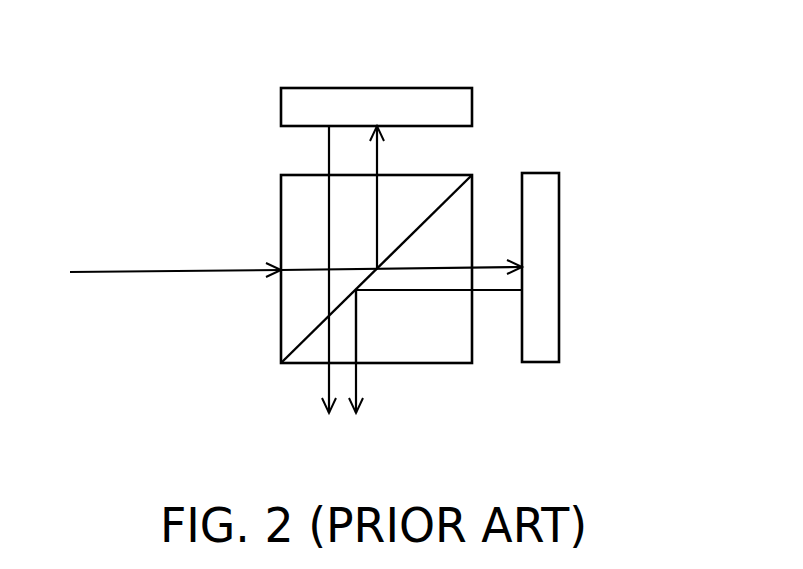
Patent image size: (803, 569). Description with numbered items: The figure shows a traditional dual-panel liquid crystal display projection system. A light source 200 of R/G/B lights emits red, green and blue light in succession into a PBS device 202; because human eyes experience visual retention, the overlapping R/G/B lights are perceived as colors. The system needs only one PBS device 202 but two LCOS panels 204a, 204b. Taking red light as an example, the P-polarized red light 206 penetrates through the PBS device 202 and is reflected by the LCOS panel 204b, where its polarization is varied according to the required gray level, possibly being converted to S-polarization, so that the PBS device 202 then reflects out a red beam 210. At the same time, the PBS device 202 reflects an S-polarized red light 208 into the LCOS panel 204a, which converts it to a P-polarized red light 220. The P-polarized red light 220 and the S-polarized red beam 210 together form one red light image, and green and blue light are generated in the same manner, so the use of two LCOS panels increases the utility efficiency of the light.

The light source of R/G/B lights 200 is at (130, 273).
The PBS device 202 is at (280, 321).
The LCOS panel 204a is at (390, 88).
The LCOS panel 204b is at (559, 290).
The P-polarized red light 206 is at (479, 262).
The S-polarized red light 208 is at (377, 188).
The red beam 210 is at (358, 376).
The P-polarized red light 220 is at (327, 376).